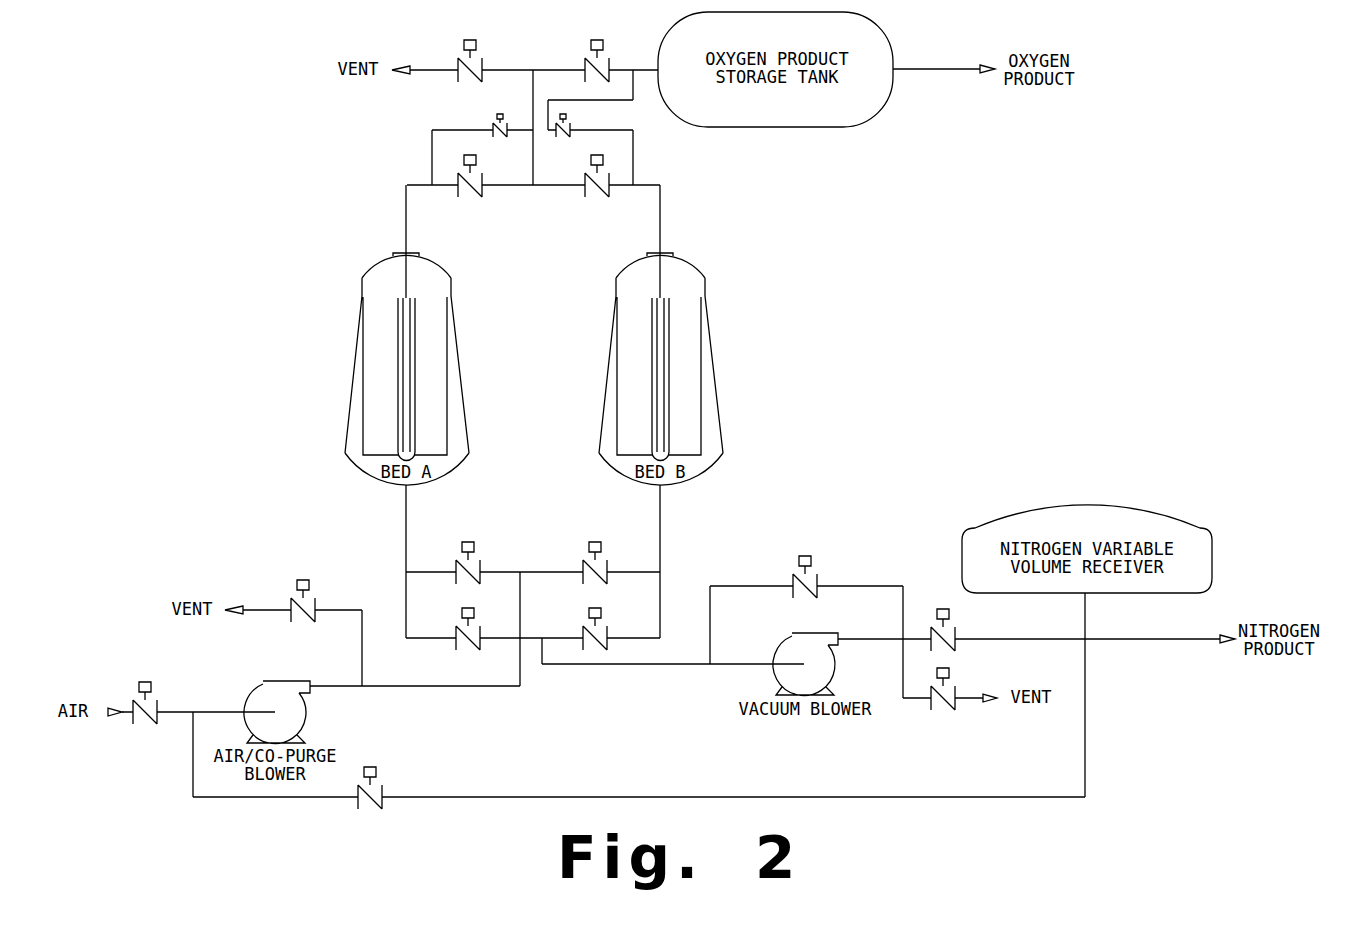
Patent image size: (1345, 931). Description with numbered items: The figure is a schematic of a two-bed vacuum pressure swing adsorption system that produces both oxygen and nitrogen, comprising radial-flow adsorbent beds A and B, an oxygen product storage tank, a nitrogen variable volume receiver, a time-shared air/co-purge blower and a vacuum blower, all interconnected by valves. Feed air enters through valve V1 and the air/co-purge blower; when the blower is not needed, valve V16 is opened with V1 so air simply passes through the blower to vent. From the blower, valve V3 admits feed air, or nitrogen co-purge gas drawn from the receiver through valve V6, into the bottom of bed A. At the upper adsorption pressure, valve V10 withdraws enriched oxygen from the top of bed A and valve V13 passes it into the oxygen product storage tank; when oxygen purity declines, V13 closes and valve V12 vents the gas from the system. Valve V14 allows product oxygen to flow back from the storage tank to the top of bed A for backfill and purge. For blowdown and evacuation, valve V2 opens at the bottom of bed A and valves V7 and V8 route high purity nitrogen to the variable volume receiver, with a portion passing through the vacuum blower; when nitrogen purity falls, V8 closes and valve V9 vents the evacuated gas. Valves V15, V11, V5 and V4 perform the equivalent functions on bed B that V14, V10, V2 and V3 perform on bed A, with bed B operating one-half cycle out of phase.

The valve V1 is at (145, 695).
The valve V2 is at (468, 621).
The valve V3 is at (468, 555).
The valve V4 is at (595, 555).
The valve V5 is at (595, 621).
The valve V6 is at (370, 780).
The valve V7 is at (805, 569).
The valve V8 is at (943, 622).
The valve V9 is at (943, 681).
The valve V10 is at (470, 168).
The valve V11 is at (597, 168).
The valve V12 is at (470, 53).
The valve V13 is at (597, 53).
The valve V14 is at (500, 118).
The valve V15 is at (578, 121).
The valve V16 is at (303, 593).